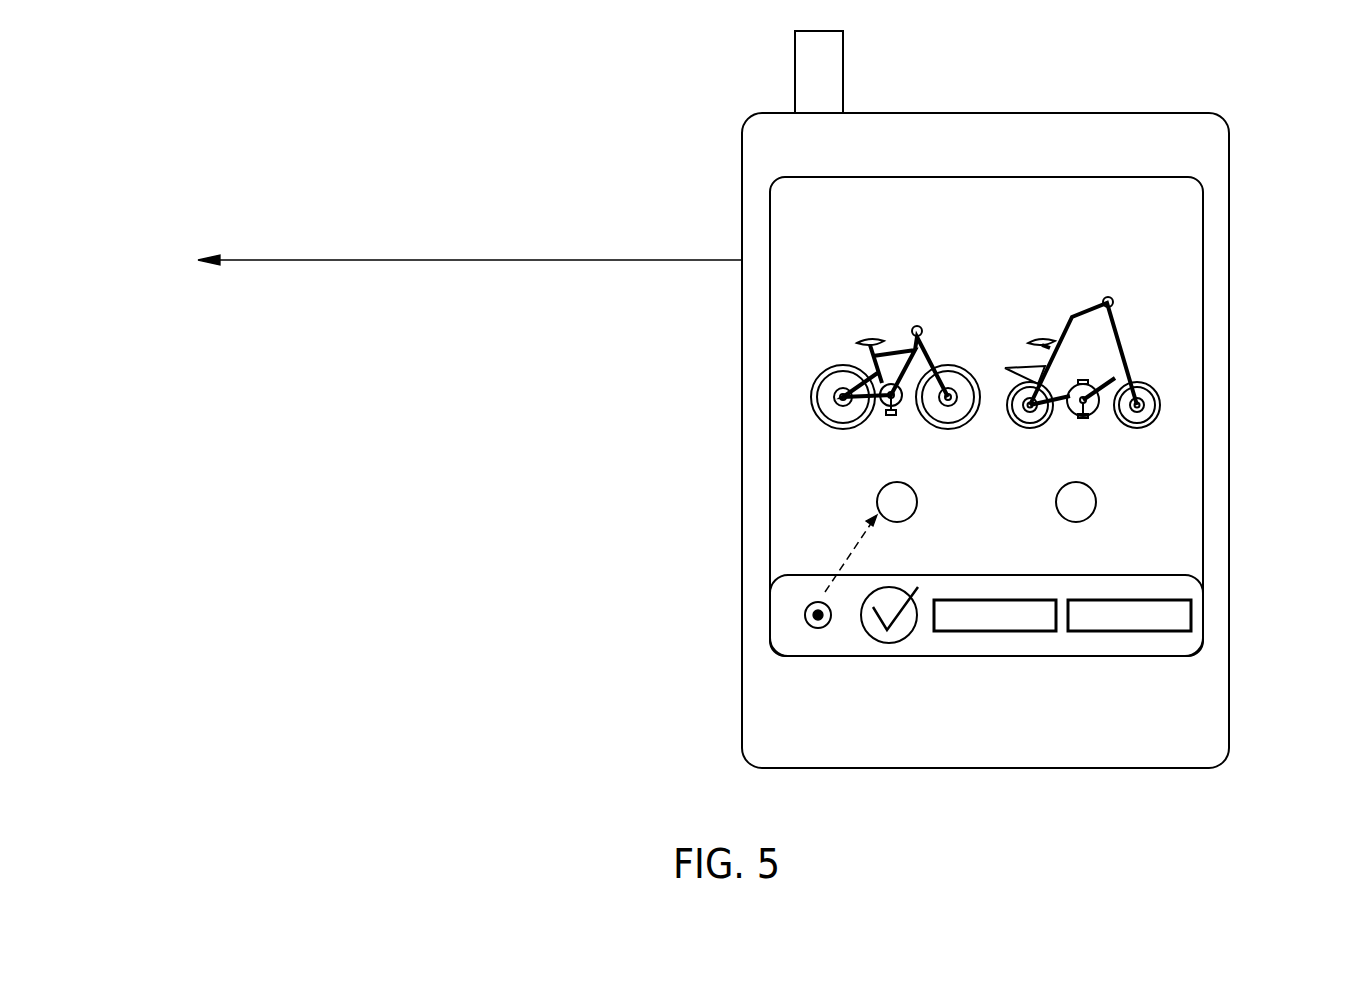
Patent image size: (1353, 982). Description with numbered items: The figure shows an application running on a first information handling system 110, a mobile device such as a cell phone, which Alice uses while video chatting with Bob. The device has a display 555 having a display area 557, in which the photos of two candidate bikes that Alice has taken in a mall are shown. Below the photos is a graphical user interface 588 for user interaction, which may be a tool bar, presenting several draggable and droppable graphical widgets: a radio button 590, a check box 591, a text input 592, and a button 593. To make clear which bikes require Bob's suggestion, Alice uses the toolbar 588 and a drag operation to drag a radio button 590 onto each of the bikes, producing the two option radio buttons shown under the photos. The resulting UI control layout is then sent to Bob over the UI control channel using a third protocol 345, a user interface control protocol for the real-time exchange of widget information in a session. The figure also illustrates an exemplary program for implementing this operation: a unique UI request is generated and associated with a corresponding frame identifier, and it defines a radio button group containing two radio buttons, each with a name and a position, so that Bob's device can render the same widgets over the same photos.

The first information handling system 110 is at (1063, 97).
The third protocol 345 is at (592, 260).
The display 555 is at (1203, 220).
The display area 557 is at (1187, 270).
The graphical user interface 588 is at (1203, 613).
The radio button 590 is at (817, 629).
The check box 591 is at (888, 644).
The text input 592 is at (997, 632).
The button 593 is at (1130, 632).